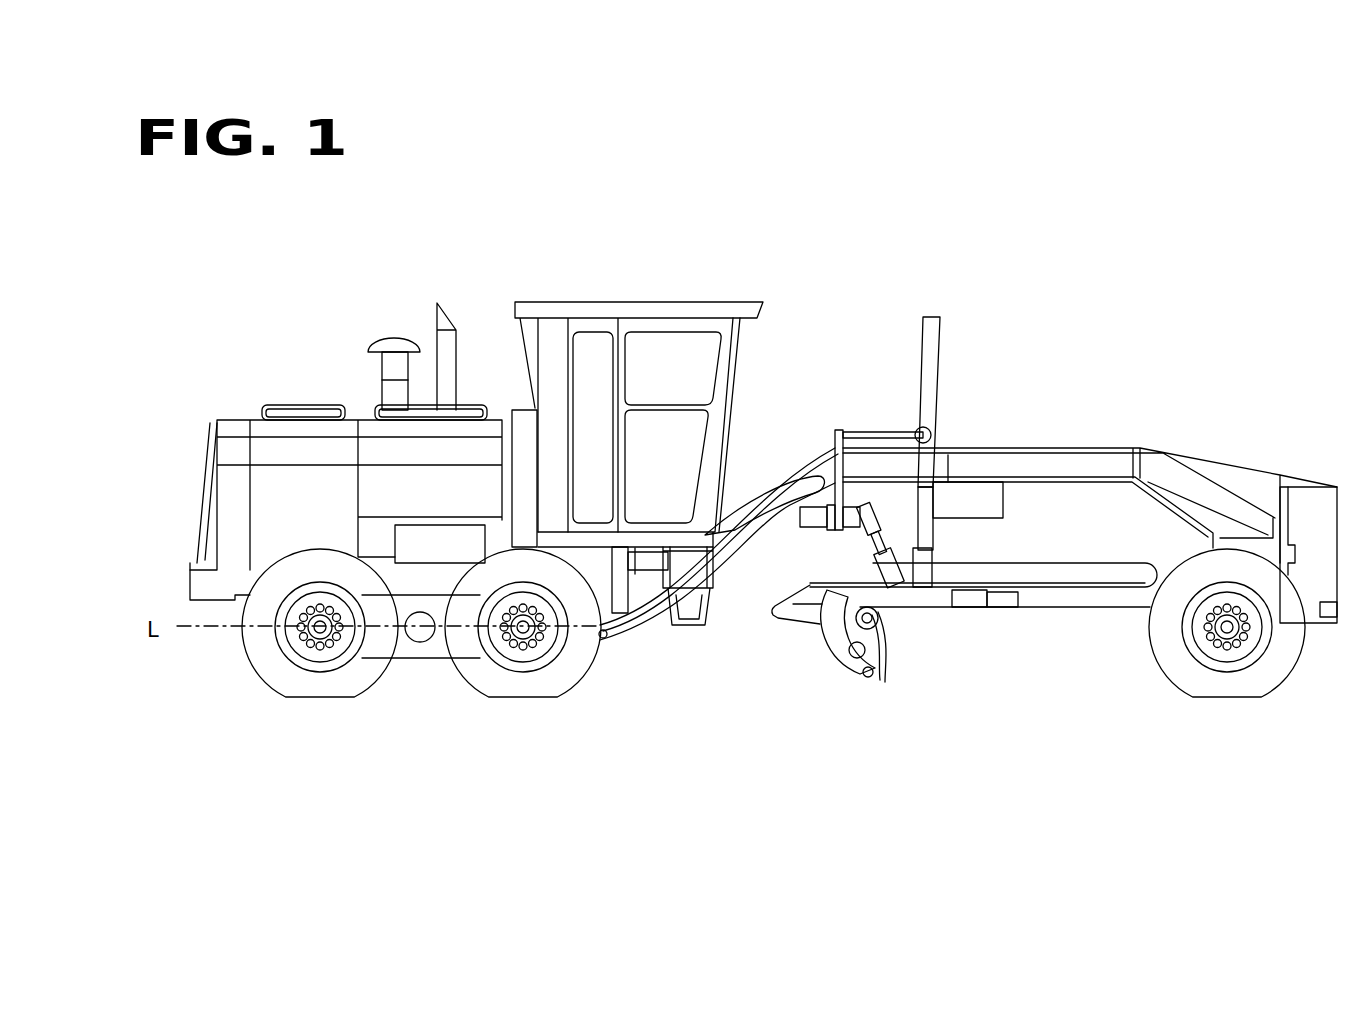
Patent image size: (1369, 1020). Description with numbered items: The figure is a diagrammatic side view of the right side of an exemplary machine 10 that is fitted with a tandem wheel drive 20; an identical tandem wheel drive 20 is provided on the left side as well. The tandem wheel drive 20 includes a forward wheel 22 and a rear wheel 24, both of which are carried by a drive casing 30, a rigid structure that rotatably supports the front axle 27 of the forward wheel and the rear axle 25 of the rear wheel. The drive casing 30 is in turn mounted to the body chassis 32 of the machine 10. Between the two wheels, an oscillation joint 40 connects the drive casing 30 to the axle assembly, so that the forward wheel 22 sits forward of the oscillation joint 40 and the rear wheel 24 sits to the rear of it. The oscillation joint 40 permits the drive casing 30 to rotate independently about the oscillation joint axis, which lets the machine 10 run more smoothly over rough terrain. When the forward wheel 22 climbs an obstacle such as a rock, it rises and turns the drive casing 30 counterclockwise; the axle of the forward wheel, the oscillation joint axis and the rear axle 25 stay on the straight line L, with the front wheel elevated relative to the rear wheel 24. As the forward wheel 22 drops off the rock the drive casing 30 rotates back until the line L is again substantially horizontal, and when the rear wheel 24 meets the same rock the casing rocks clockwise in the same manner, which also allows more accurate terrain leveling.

The machine 10 is at (825, 283).
The tandem wheel drive 20 is at (600, 717).
The forward wheel 22 is at (613, 672).
The rear wheel 24 is at (233, 650).
The rear axle 25 is at (312, 628).
The front axle 27 is at (600, 642).
The drive casing 30 is at (432, 660).
The body chassis 32 is at (735, 533).
The oscillation joint 40 is at (417, 633).